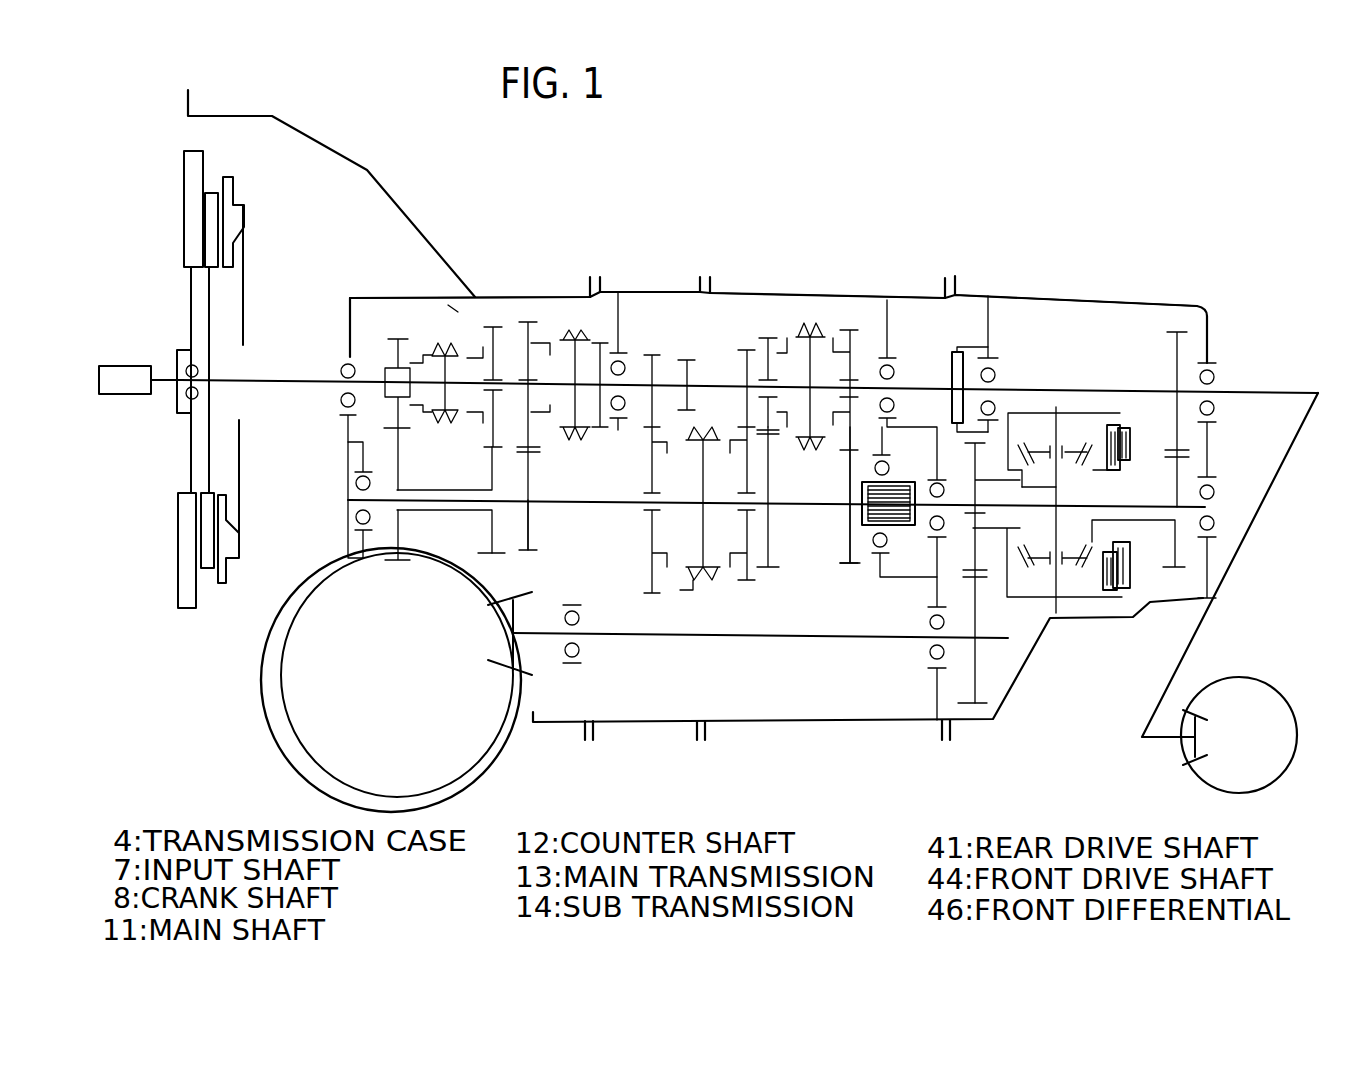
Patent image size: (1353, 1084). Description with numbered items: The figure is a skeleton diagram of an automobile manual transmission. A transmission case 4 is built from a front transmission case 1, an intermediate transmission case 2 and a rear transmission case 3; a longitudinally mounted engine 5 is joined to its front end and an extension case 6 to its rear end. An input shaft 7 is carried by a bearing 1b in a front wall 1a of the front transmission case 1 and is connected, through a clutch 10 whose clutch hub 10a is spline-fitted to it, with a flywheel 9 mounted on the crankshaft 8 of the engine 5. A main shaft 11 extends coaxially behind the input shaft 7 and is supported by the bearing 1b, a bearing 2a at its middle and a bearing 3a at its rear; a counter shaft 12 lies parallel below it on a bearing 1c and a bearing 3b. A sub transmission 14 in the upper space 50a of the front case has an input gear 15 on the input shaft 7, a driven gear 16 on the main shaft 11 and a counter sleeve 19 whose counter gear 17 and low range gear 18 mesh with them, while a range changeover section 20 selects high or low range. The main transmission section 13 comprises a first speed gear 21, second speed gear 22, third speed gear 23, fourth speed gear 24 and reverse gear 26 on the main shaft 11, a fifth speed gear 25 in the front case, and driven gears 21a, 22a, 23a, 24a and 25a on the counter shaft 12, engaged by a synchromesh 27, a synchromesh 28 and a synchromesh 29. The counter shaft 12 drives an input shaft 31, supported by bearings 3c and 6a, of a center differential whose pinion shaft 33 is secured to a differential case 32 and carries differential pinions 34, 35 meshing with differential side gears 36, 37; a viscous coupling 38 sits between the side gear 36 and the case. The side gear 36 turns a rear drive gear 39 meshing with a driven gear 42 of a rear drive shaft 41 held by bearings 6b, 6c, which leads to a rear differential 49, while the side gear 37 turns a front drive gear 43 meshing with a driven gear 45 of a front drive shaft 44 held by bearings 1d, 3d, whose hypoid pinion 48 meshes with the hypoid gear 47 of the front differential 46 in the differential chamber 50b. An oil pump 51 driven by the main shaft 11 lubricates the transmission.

The front transmission case 1 is at (558, 293).
The front wall 1a is at (347, 462).
The bearing 1b is at (340, 401).
The bearing 1c is at (356, 516).
The bearing 1d is at (568, 658).
The intermediate transmission case 2 is at (642, 292).
The bearing 2a is at (607, 442).
The rear transmission case 3 is at (732, 290).
The bearing 3a is at (896, 370).
The bearing 3b is at (875, 470).
The bearing 3c is at (930, 484).
The bearing 3d is at (929, 656).
The transmission case 4 is at (722, 227).
The engine 5 is at (131, 396).
The extension case 6 is at (1100, 302).
The bearing 6a is at (1216, 492).
The bearing 6b is at (1217, 375).
The bearing 6c is at (996, 375).
The input shaft 7 is at (283, 378).
The crankshaft 8 is at (183, 366).
The flywheel 9 is at (183, 557).
The clutch 10 is at (257, 238).
The clutch hub 10a is at (213, 224).
The main shaft 11 is at (632, 420).
The counter shaft 12 is at (602, 502).
The main transmission section 13 is at (768, 388).
The sub transmission 14 is at (433, 413).
The input gear 15 is at (397, 336).
The driven gear 16 is at (492, 318).
The counter gear 17 is at (398, 540).
The low range gear 18 is at (487, 556).
The counter sleeve 19 is at (447, 511).
The range changeover section 20 is at (447, 424).
The first speed gear 21 is at (650, 354).
The driven gear 21a is at (645, 595).
The second speed gear 22 is at (746, 349).
The driven gear 22a is at (750, 582).
The third speed gear 23 is at (775, 337).
The driven gear 23a is at (768, 570).
The fourth speed gear 24 is at (852, 329).
The driven gear 24a is at (850, 565).
The fifth speed gear 25 is at (527, 320).
The driven gear 25a is at (530, 530).
The reverse gear 26 is at (687, 359).
The synchromesh 27 is at (702, 585).
The synchromesh 28 is at (797, 458).
The synchromesh 29 is at (578, 318).
The input shaft 31 is at (955, 516).
The differential case 32 is at (1040, 415).
The pinion shaft 33 is at (1057, 583).
The differential pinion 34 is at (1081, 512).
The differential pinion 35 is at (1037, 570).
The differential side gear 36 is at (1112, 470).
The differential side gear 37 is at (1022, 472).
The viscous coupling 38 is at (1120, 592).
The rear drive gear 39 is at (1170, 570).
The rear drive shaft 41 is at (1130, 392).
The driven gear 42 is at (1182, 332).
The front drive gear 43 is at (977, 557).
The front drive shaft 44 is at (818, 640).
The driven gear 45 is at (975, 705).
The front differential 46 is at (378, 683).
The differential case 47 is at (503, 740).
The hypoid pinion 48 is at (493, 667).
The rear differential 49 is at (1270, 702).
The space 50a is at (453, 310).
The differential chamber 50b is at (308, 775).
The oil pump 51 is at (957, 370).